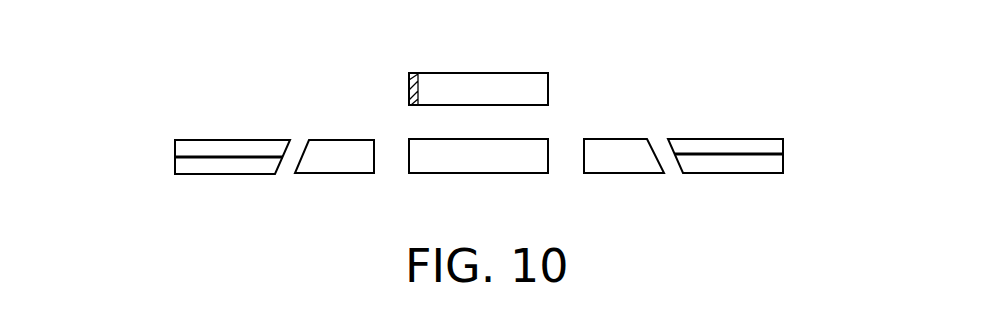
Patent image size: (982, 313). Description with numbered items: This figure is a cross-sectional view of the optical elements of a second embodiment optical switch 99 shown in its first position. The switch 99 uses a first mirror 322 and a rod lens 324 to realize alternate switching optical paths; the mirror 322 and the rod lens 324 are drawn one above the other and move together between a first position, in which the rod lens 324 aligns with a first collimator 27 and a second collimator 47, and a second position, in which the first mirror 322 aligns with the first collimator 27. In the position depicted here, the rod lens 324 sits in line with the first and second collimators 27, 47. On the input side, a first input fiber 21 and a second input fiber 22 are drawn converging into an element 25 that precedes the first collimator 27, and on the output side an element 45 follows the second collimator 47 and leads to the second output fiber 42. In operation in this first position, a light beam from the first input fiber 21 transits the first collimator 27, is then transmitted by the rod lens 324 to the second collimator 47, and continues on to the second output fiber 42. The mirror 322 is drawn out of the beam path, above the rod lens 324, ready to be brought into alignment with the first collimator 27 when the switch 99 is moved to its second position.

The first input fiber 21 is at (175, 157).
The second input light signal 22 is at (175, 157).
The first birefringent crystal 25 is at (224, 140).
The first collimator 27 is at (334, 140).
The first mirror 322 is at (416, 73).
The rod lens 324 is at (468, 173).
The optical switch 99 is at (612, 40).
The second collimator 47 is at (630, 139).
The second birefringent crystal 45 is at (767, 139).
The second output fiber 42 is at (783, 154).